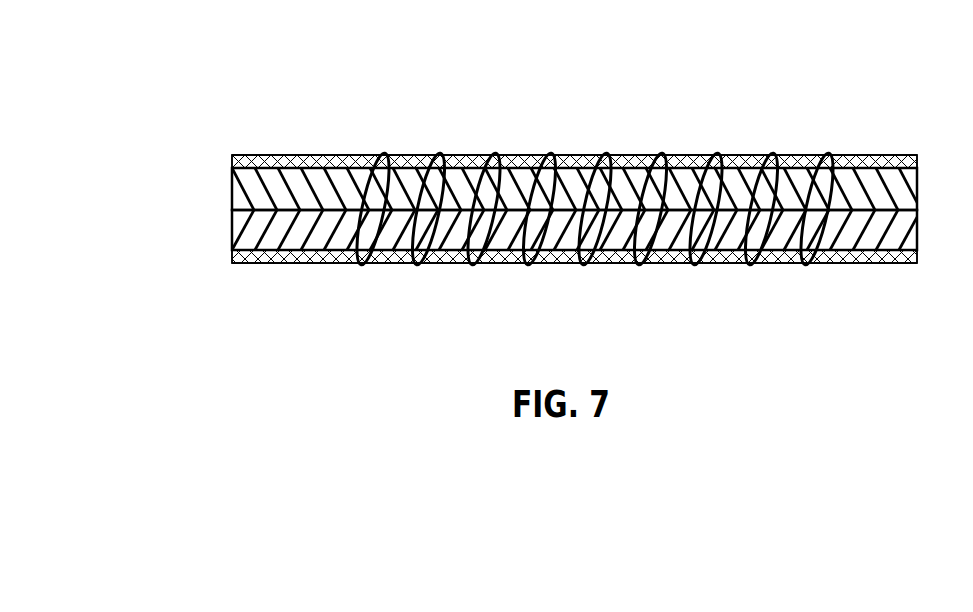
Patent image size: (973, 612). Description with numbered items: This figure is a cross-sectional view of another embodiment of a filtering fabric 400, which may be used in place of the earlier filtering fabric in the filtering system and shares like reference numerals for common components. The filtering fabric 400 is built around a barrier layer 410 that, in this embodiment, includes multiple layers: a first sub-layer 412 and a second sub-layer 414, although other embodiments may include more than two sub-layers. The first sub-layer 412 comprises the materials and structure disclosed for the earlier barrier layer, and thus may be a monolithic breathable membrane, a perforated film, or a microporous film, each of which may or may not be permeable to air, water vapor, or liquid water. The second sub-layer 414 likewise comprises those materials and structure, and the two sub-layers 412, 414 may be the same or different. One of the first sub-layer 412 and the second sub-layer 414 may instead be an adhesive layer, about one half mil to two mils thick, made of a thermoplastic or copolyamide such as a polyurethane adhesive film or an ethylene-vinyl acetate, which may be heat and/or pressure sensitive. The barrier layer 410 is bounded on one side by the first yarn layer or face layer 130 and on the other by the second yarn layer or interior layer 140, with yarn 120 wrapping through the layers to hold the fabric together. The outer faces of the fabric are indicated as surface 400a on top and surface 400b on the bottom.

The filtering fabric 400 is at (224, 63).
The first yarn layer or face layer 130 is at (234, 155).
The second yarn layer or interior layer 140 is at (233, 263).
The barrier layer 410 is at (500, 210).
The first sub-layer 412 is at (231, 188).
The second sub-layer 414 is at (547, 230).
The top surface 400a is at (862, 155).
The bottom surface 400b is at (877, 265).
The yarn 120 is at (760, 264).